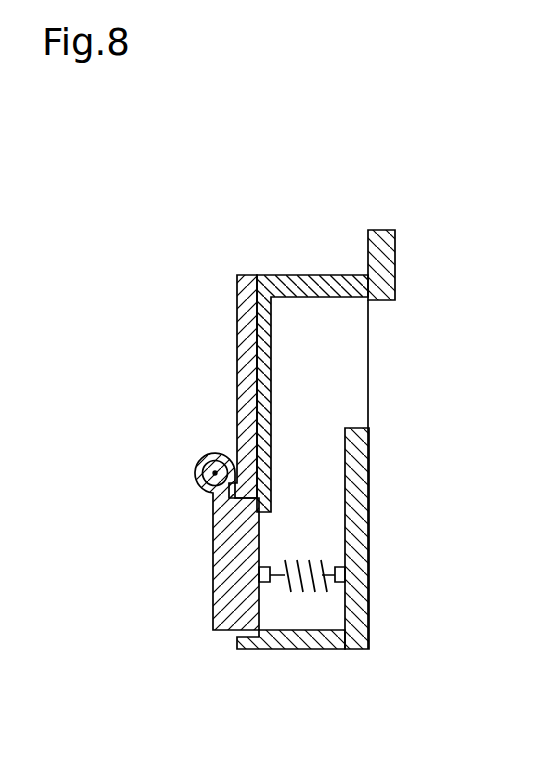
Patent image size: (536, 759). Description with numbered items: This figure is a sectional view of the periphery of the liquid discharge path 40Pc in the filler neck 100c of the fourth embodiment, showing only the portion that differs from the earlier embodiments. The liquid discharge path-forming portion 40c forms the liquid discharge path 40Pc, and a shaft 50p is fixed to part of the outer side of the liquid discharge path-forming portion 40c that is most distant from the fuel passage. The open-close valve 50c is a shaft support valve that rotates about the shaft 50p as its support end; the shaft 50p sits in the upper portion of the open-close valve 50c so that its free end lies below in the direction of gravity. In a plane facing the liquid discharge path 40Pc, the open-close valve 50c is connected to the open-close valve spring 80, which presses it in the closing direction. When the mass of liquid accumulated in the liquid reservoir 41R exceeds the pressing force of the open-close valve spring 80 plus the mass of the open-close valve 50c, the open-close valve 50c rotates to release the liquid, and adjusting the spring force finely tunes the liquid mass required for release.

The filler neck 100c is at (375, 228).
The liquid discharge path-forming portion 40c is at (237, 399).
The liquid discharge path 40Pc is at (306, 430).
The open-close valve 50c is at (213, 609).
The shaft 50p is at (205, 492).
The liquid reservoir 41R is at (283, 608).
The open-close valve spring 80 is at (322, 593).